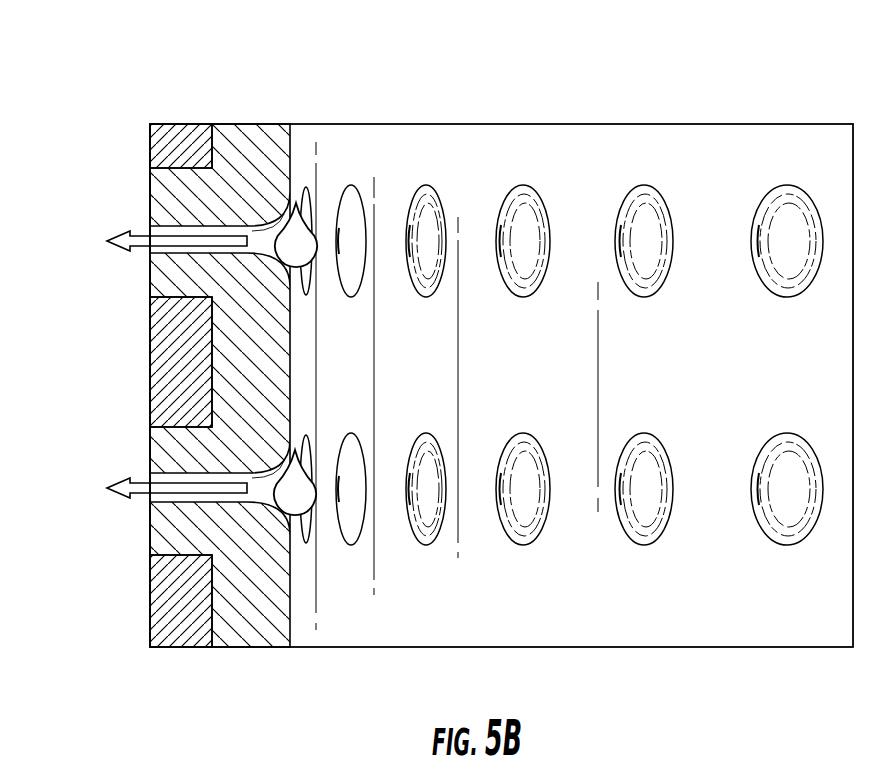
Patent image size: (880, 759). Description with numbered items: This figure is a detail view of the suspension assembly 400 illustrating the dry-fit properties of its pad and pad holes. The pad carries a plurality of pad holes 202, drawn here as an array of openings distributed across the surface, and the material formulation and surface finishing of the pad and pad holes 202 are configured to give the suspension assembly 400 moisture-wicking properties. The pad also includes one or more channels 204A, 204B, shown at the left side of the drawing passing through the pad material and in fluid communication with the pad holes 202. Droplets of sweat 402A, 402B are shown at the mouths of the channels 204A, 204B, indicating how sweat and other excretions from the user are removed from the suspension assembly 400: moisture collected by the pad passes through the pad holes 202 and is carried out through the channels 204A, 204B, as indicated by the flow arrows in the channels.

The suspension assembly 400 is at (92, 107).
The pad holes 202 is at (655, 210).
The channel 204A is at (165, 241).
The channel 204B is at (167, 488).
The sweat 402A is at (308, 232).
The sweat 402B is at (288, 498).